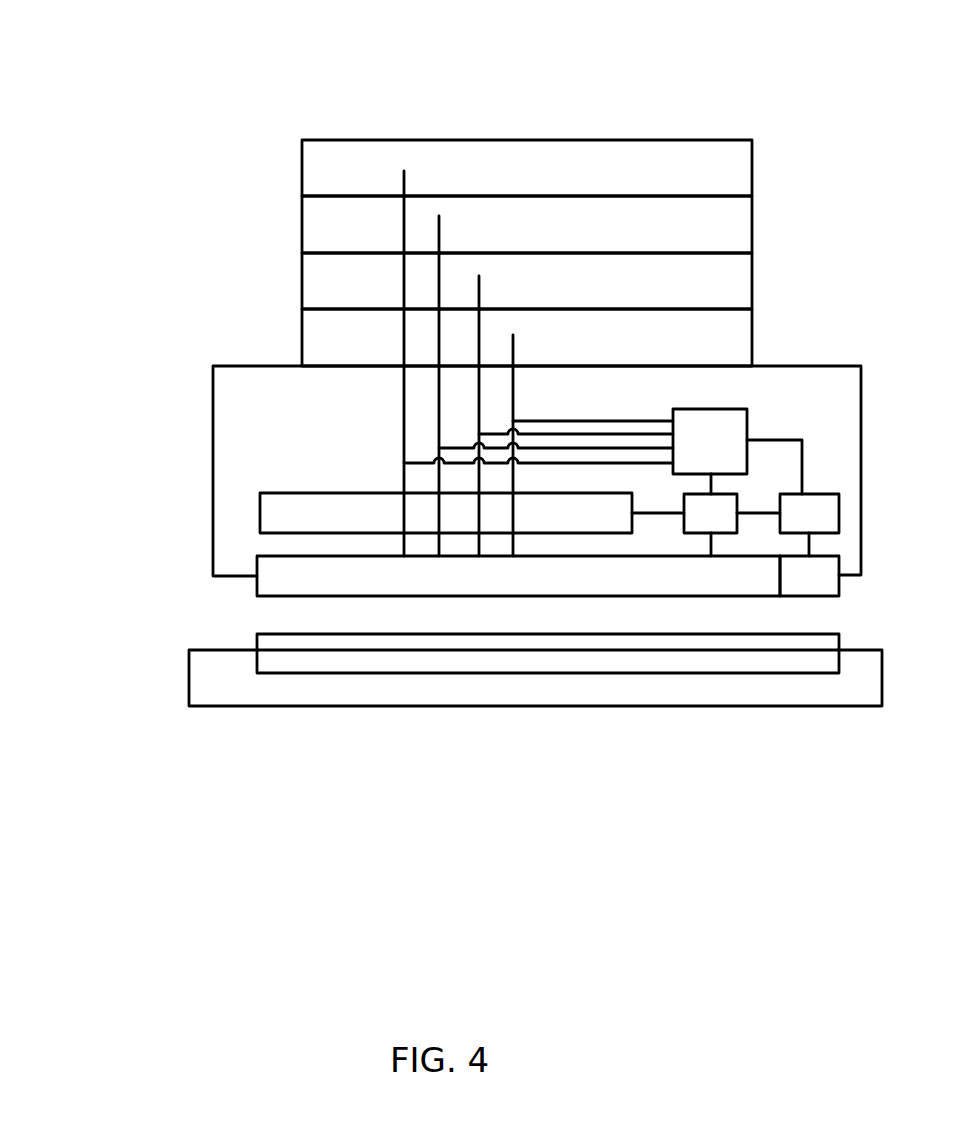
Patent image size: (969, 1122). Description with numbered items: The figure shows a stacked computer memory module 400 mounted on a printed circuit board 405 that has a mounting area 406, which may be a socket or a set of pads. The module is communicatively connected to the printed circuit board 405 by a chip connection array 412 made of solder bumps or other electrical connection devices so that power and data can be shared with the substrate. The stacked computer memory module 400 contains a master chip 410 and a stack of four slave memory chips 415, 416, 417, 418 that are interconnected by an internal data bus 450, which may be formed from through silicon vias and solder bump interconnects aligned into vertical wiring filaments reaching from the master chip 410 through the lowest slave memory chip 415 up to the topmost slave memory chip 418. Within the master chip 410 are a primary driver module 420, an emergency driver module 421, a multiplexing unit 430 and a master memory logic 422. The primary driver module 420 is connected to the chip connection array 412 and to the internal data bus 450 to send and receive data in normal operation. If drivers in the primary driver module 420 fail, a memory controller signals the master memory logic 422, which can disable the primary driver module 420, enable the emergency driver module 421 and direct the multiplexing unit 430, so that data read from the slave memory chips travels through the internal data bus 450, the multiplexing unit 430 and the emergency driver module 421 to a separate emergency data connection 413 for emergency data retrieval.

The stacked computer memory module 400 is at (285, 90).
The printed circuit board 405 is at (233, 680).
The mounting area 406 is at (300, 665).
The master chip 410 is at (831, 404).
The chip connection array 412 is at (300, 588).
The emergency data connection 413 is at (824, 588).
The slave memory chip 415 is at (318, 338).
The slave memory chip 416 is at (318, 281).
The slave memory chip 417 is at (318, 227).
The slave memory chip 418 is at (330, 171).
The primary driver module 420 is at (465, 523).
The emergency driver module 421 is at (828, 524).
The master memory logic 422 is at (729, 524).
The multiplexing unit 430 is at (729, 453).
The internal data bus 450 is at (563, 419).